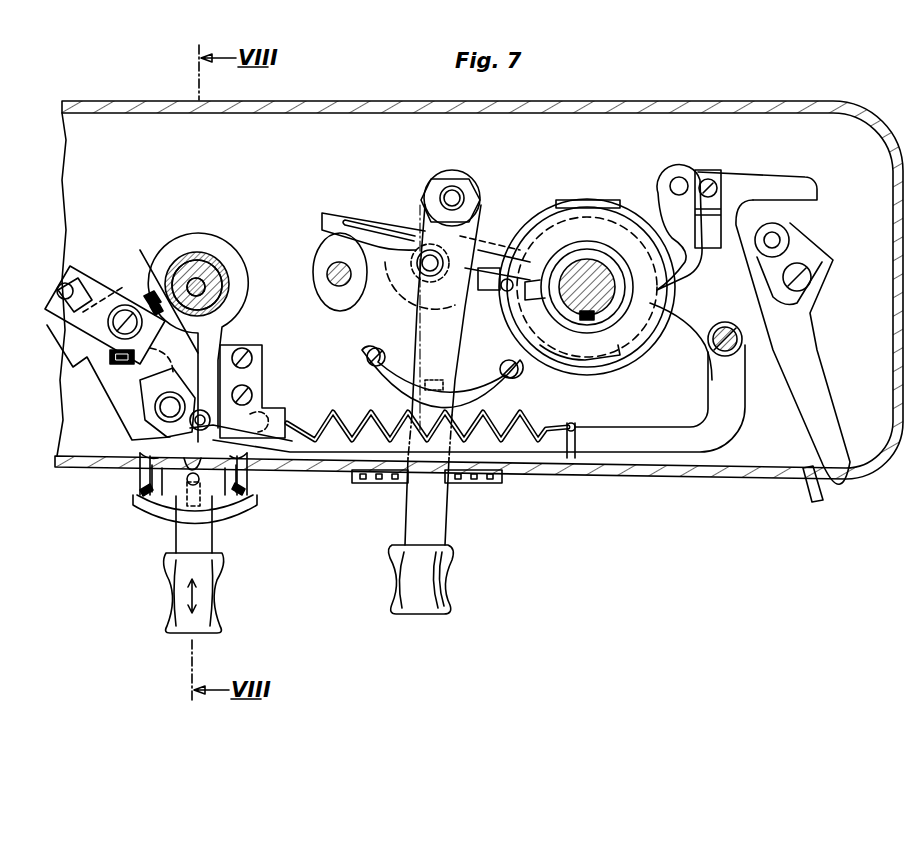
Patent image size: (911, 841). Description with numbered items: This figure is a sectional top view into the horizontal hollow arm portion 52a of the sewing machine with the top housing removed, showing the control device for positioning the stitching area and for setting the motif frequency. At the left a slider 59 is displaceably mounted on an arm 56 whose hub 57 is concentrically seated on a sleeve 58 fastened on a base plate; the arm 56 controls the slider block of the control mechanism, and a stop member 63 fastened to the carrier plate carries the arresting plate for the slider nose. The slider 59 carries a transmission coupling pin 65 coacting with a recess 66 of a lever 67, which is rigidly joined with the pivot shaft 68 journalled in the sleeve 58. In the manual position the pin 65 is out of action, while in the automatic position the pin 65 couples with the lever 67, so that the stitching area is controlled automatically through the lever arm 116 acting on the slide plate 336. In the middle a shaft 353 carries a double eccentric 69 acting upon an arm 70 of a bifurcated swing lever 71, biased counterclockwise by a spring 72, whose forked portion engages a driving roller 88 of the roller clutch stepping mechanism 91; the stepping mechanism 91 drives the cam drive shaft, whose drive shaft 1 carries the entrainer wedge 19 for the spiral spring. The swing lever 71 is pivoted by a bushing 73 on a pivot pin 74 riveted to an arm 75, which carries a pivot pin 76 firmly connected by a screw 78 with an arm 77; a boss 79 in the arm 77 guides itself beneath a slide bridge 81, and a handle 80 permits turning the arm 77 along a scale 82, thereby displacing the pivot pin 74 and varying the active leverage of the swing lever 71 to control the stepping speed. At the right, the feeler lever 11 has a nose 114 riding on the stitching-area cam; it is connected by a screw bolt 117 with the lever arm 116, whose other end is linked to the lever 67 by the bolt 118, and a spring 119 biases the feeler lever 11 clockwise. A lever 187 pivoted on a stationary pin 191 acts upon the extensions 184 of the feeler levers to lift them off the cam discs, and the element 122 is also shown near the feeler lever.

The drive shaft 1 is at (588, 262).
The feeler lever 11 is at (700, 332).
The entrainer wedge 19 is at (590, 320).
The horizontal hollow arm portion 52a is at (622, 480).
The arm 56 is at (252, 376).
The hub 57 is at (197, 262).
The sleeve 58 is at (212, 262).
The slider 59 is at (168, 604).
The stop member 63 is at (255, 516).
The transmission coupling pin 65 is at (204, 484).
The recess 66 is at (192, 468).
The lever 67 is at (224, 318).
The pivot shaft 68 is at (210, 285).
The double eccentric 69 is at (355, 305).
The arm of swing lever 70 is at (358, 237).
The bifurcated swing lever 71 is at (483, 252).
The spring 72 is at (393, 253).
The bushing 73 is at (418, 266).
The pivot pin 74 is at (424, 272).
The arm 75 is at (421, 232).
The pivot pin 76 is at (452, 192).
The arm 77 is at (408, 522).
The screw 78 is at (475, 186).
The boss 79 is at (434, 380).
The handle 80 is at (448, 606).
The slide bridge 81 is at (498, 396).
The scale 82 is at (482, 485).
The driving roller 88 is at (498, 306).
The roller clutch stepping mechanism 91 is at (588, 200).
The nose 114 is at (656, 232).
The lever arm 116 is at (684, 460).
The screw bolt 117 is at (730, 352).
The bolt 118 is at (208, 416).
The spring 119 is at (333, 418).
The block 122 is at (683, 178).
The extensions 184 is at (818, 195).
The lever 187 is at (847, 492).
The stationary pin 191 is at (781, 240).
The slide plate 336 is at (120, 412).
The shaft 353 is at (333, 277).